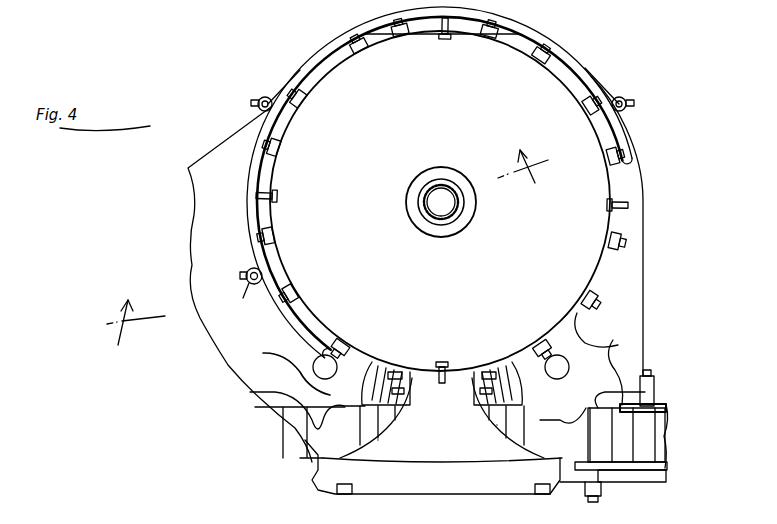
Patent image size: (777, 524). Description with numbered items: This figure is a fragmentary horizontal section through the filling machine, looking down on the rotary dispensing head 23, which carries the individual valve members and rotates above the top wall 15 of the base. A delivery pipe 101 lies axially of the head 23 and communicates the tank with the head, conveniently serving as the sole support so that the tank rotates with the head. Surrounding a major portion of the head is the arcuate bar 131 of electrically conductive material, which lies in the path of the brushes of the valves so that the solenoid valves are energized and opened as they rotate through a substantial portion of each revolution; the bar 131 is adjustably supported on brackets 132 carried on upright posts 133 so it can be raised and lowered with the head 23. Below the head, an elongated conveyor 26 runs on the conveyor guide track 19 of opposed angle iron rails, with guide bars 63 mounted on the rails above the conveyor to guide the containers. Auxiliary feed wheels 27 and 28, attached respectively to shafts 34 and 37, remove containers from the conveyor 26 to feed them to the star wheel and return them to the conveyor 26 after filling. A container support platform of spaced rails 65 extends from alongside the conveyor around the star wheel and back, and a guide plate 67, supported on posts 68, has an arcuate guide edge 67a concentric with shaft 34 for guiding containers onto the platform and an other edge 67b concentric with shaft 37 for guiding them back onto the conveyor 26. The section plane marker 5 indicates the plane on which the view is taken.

The rotary dispensing head 23 is at (543, 92).
The delivery pipe 101 is at (457, 207).
The arcuate bar 131 is at (257, 222).
The bracket 132 is at (252, 268).
The upright post 133 is at (249, 288).
The top wall 15 is at (630, 268).
The section line 5 is at (327, 261).
The auxiliary feed wheel 27 is at (289, 360).
The auxiliary feed wheel 28 is at (603, 347).
The shaft 34 is at (325, 370).
The shaft 37 is at (559, 370).
The spaced rails 65 is at (382, 395).
The guide plate 67 is at (320, 480).
The arcuate guide edge 67a is at (378, 441).
The other edge 67b is at (497, 427).
The post 68 is at (352, 487).
The elongated conveyor 26 is at (292, 432).
The conveyor guide track 19 is at (650, 402).
The guide bar 63 is at (664, 470).